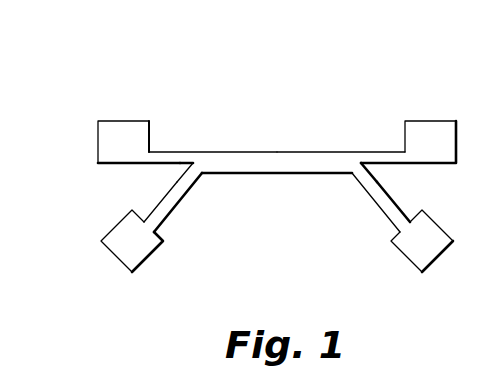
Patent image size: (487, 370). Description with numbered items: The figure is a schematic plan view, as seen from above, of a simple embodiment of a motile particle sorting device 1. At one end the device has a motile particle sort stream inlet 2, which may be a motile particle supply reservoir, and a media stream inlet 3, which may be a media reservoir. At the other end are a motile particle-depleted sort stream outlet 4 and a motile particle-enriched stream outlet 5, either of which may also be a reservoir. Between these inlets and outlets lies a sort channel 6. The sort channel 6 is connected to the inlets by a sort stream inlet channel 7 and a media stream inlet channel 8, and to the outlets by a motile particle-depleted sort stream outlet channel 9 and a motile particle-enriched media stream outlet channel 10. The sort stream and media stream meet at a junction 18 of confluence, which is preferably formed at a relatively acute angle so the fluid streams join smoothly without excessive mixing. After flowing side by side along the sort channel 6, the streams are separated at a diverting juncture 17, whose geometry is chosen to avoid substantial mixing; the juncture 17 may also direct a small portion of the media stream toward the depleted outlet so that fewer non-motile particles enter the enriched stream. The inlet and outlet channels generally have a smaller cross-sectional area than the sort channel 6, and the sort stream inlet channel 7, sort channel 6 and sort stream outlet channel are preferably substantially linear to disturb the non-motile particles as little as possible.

The motile particle sorting device 1 is at (272, 128).
The motile particle sort stream inlet 2 is at (139, 119).
The media stream inlet 3 is at (138, 252).
The motile particle-depleted sort stream outlet 4 is at (429, 132).
The motile particle-enriched stream outlet 5 is at (410, 248).
The sort channel 6 is at (287, 173).
The sort stream inlet channel 7 is at (167, 152).
The media stream inlet channel 8 is at (178, 202).
The motile particle-depleted sort stream outlet channel 9 is at (389, 152).
The motile particle-enriched media stream outlet channel 10 is at (374, 200).
The diverting juncture 17 is at (367, 168).
The junction of confluence 18 is at (200, 163).